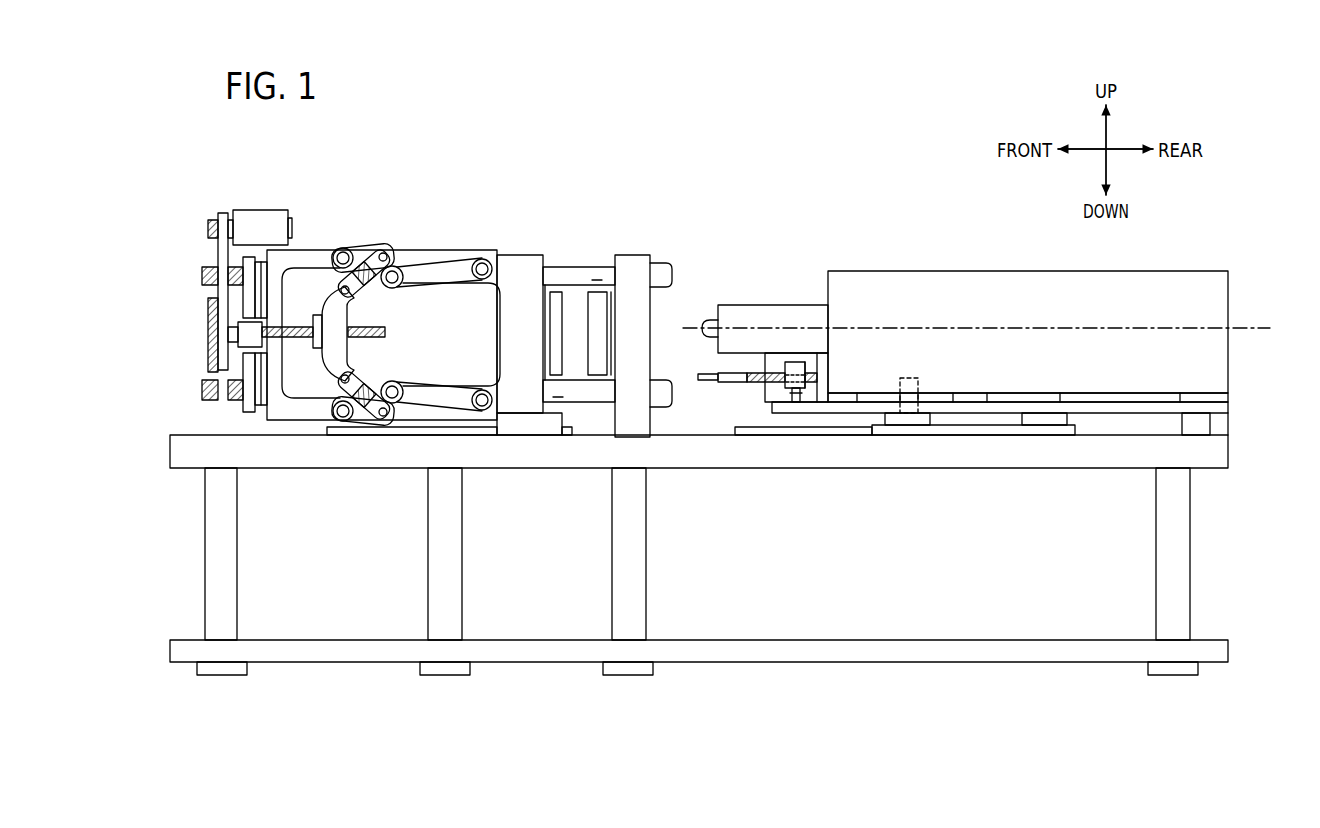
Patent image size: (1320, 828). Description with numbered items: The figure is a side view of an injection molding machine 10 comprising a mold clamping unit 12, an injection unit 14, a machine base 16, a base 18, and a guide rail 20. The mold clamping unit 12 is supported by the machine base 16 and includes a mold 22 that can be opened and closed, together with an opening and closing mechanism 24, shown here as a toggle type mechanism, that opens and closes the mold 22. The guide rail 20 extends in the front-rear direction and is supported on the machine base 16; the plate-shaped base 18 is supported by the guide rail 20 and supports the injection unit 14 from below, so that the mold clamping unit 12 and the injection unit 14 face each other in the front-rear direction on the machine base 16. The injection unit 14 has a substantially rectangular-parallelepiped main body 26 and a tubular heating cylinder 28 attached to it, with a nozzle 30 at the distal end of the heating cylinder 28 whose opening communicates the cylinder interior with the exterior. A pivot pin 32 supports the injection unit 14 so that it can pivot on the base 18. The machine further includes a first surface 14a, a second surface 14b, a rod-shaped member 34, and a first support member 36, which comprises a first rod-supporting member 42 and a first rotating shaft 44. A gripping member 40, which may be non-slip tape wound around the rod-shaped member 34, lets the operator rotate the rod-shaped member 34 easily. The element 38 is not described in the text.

The injection molding machine 10 is at (780, 181).
The mold clamping unit 12 is at (498, 197).
The injection unit 14 is at (894, 262).
The first surface 14a is at (823, 379).
The second surface 14b is at (783, 404).
The machine base 16 is at (164, 447).
The base 18 is at (1219, 408).
The guide rail 20 is at (848, 432).
The mold 22 is at (601, 312).
The opening and closing mechanism 24 is at (441, 252).
The main body 26 is at (1111, 286).
The heating cylinder 28 is at (750, 305).
The nozzle 30 is at (708, 322).
The pivot pin 32 is at (920, 378).
The rod-shaped member 34 is at (740, 373).
The first support member 36 is at (808, 367).
The screw shaft 38 is at (752, 383).
The gripping member 40 is at (706, 375).
The first rod-supporting member 42 is at (795, 362).
The first rotating shaft 44 is at (796, 401).